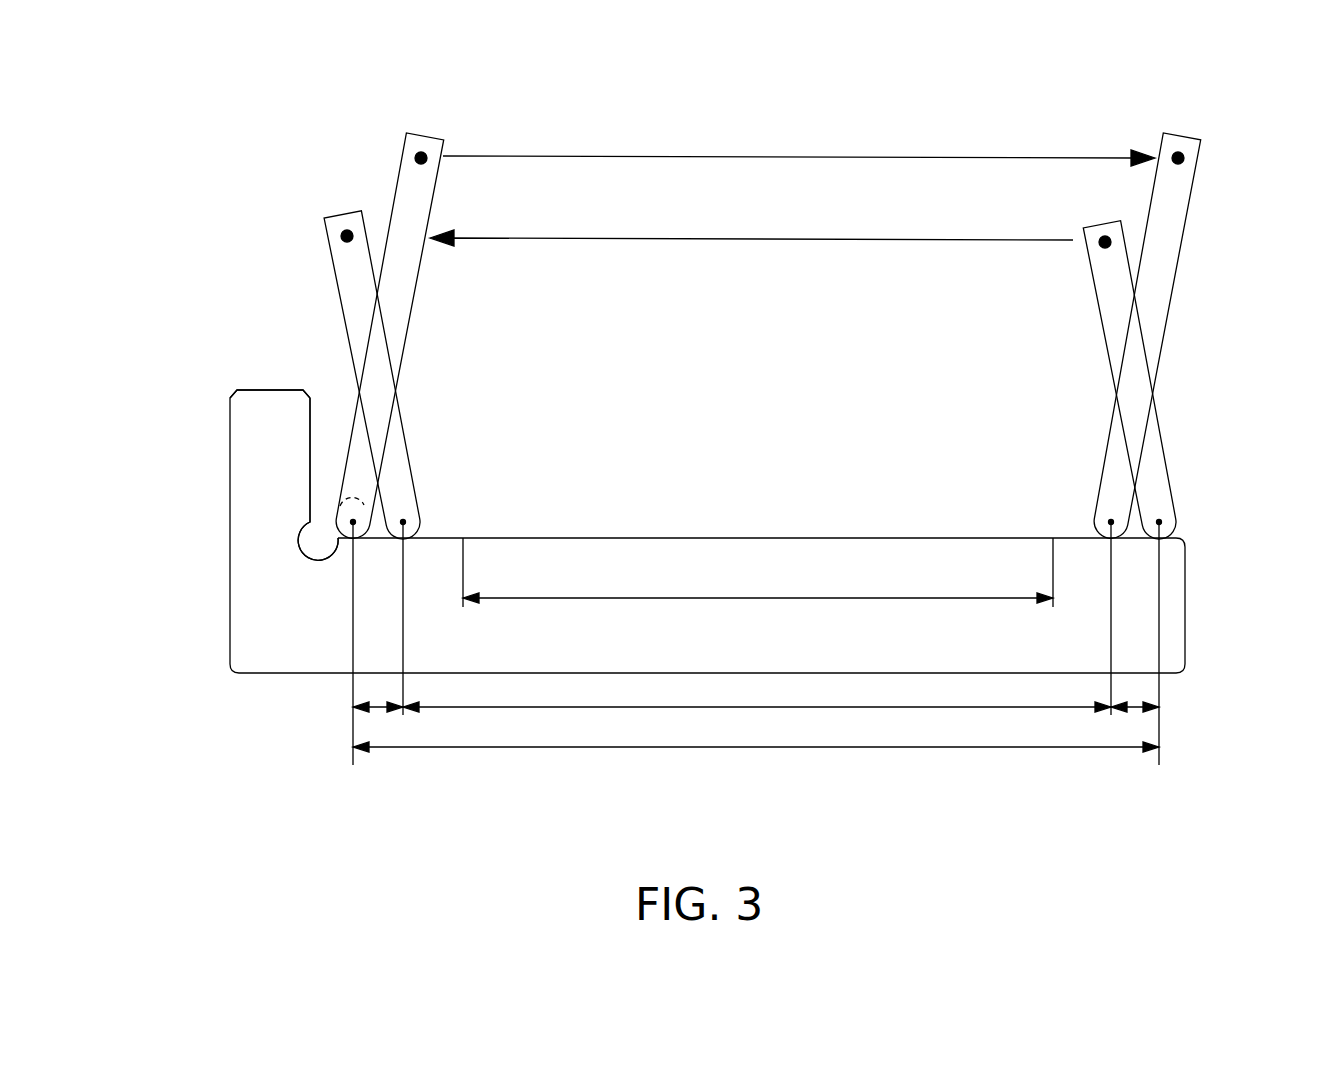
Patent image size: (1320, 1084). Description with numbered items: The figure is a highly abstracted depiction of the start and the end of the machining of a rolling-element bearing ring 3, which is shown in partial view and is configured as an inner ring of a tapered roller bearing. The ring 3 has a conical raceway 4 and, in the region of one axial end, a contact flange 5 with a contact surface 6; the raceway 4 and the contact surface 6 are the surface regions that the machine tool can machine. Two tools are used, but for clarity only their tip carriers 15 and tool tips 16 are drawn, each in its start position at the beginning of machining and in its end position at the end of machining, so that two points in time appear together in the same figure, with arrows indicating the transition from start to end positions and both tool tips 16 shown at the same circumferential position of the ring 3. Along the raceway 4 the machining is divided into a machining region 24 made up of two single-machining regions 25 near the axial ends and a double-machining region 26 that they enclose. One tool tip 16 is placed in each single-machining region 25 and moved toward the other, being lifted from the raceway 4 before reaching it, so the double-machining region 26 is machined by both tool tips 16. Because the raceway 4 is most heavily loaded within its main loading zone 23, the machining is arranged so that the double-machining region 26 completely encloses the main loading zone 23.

The rolling-element bearing ring 3 is at (230, 598).
The conical raceway 4 is at (682, 532).
The contact flange 5 is at (267, 390).
The contact surface 6 is at (308, 463).
The tip carrier 15 is at (1162, 423).
The tool tip 16 is at (1170, 527).
The main loading zone 23 is at (570, 595).
The machining region 24 is at (562, 748).
The single-machining region 25 is at (1135, 707).
The double-machining region 26 is at (697, 710).